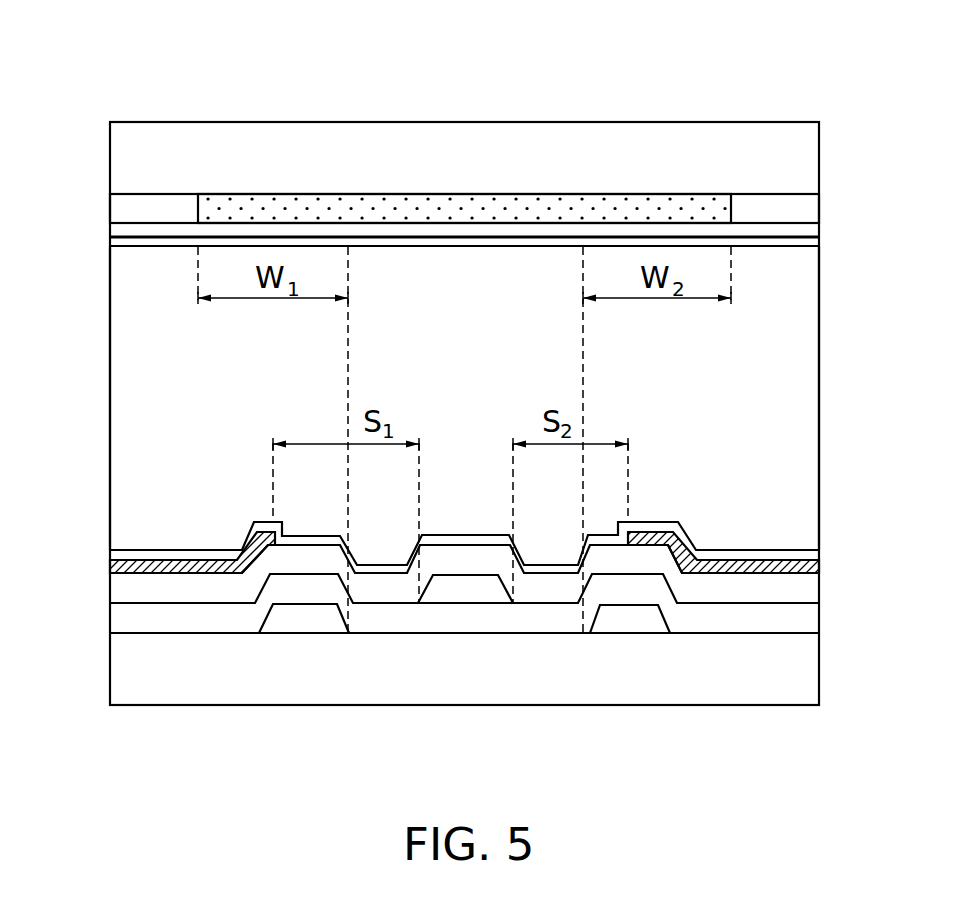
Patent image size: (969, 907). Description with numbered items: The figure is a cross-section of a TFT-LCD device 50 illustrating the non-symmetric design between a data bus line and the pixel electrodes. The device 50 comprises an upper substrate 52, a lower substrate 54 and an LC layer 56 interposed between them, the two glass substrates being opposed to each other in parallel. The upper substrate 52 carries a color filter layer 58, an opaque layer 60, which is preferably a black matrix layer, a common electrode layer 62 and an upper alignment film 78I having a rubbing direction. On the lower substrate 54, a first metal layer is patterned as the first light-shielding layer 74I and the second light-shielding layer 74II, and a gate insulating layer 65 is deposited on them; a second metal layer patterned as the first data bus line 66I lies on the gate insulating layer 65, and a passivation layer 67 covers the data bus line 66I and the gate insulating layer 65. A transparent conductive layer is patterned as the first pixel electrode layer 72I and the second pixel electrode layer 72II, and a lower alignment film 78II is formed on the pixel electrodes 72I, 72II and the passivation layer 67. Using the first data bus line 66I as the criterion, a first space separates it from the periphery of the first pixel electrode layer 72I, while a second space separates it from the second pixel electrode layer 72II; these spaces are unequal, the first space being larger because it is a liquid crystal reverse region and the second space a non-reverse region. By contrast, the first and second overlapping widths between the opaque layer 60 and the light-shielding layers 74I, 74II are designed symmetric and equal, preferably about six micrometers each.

The TFT-LCD device 50 is at (672, 90).
The upper substrate 52 is at (810, 160).
The color filter layer 58 is at (810, 207).
The opaque layer 60 is at (205, 209).
The common electrode layer 62 is at (810, 227).
The upper alignment film 78I is at (810, 245).
The LC layer 56 is at (810, 413).
The lower alignment film 78II is at (800, 551).
The second pixel electrode layer 72II is at (800, 567).
The first pixel electrode layer 72I is at (115, 570).
The passivation layer 67 is at (813, 588).
The gate insulating layer 65 is at (813, 617).
The lower substrate 54 is at (813, 668).
The first light-shielding layer 74I is at (303, 697).
The first data bus line 66I is at (467, 588).
The second light-shielding layer 74II is at (628, 697).